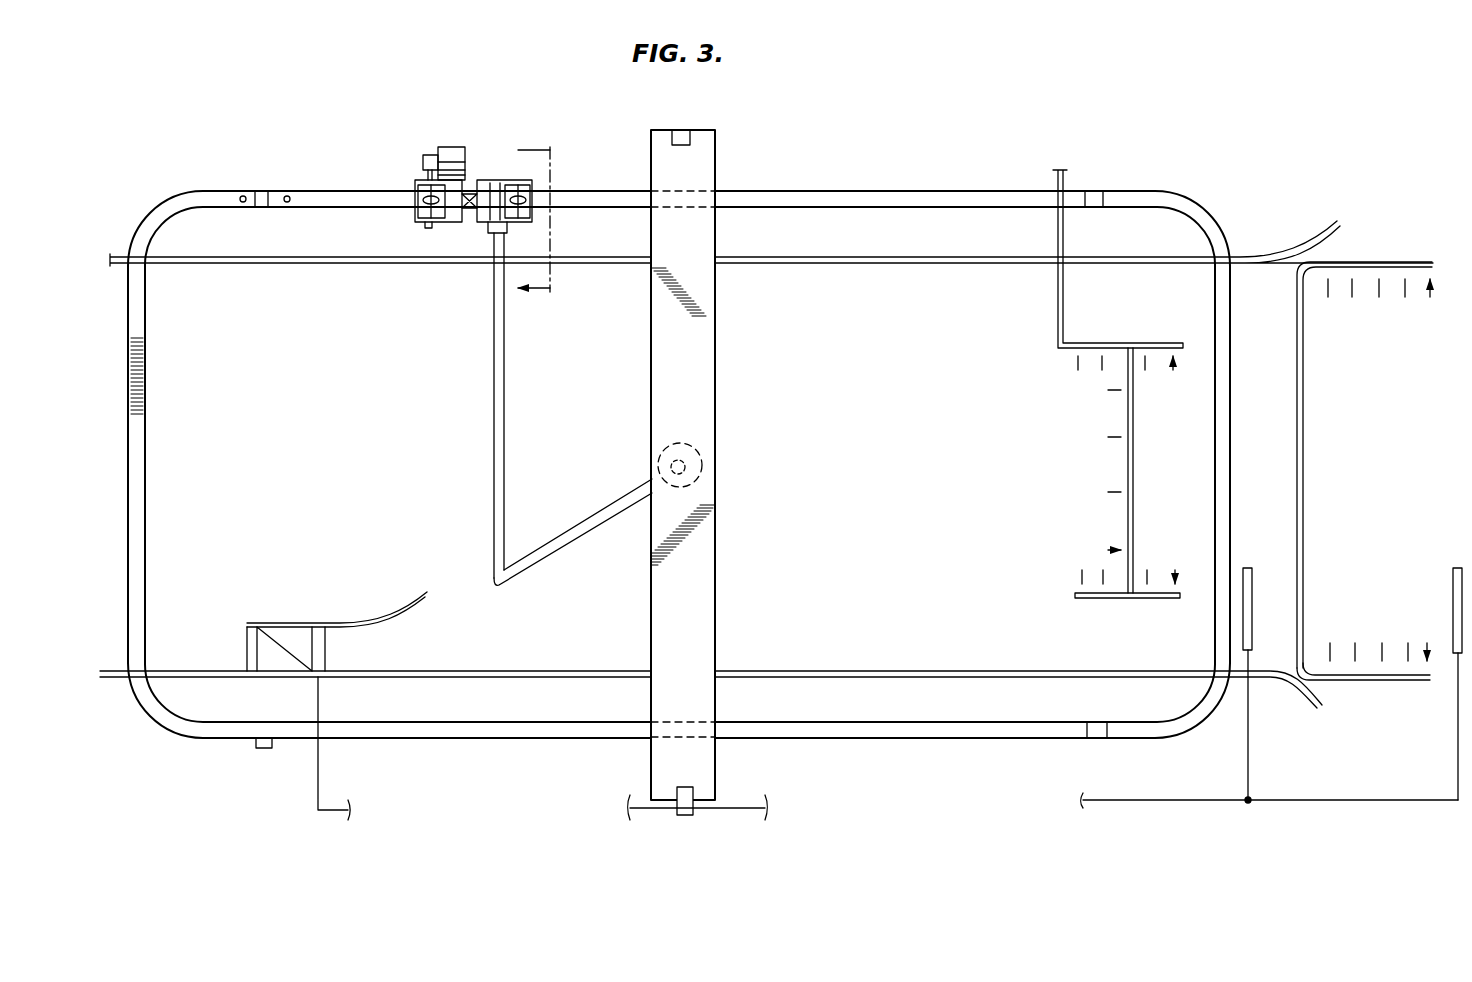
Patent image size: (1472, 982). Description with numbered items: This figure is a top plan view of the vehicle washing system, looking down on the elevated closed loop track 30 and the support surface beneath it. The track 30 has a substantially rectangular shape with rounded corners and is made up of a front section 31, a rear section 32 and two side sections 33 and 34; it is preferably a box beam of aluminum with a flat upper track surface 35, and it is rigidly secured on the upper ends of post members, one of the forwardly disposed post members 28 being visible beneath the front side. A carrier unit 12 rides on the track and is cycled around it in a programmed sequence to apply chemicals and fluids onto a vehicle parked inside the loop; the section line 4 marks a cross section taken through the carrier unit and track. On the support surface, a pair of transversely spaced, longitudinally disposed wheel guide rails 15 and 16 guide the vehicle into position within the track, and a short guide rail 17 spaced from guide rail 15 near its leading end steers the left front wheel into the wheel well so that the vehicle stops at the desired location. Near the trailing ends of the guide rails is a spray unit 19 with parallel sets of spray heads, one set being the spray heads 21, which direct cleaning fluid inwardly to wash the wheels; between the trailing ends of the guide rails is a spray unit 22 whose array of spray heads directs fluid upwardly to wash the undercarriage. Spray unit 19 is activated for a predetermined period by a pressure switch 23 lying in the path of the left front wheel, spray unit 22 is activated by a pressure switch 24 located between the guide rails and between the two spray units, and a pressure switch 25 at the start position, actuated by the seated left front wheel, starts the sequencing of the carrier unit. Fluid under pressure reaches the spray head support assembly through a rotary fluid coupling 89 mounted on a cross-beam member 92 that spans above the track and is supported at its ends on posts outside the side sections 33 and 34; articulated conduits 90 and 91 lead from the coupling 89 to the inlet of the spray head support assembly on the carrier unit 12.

The carrier unit 12 is at (410, 158).
The section line 4- 4 is at (534, 217).
The wheel guide rail 15 is at (870, 668).
The wheel guide rail 16 is at (786, 265).
The short guide rail 17 is at (405, 613).
The spray unit 19 is at (1305, 391).
The spray heads 21 is at (1378, 291).
The spray unit 22 is at (1125, 462).
The pressure switch 23 is at (1452, 608).
The pressure switch 24 is at (1253, 610).
The pressure switch 25 is at (282, 640).
The post member 28 is at (258, 750).
The closed loop track 30 is at (945, 189).
The front section 31 is at (148, 522).
The rear section 32 is at (1232, 470).
The side section 33 is at (888, 739).
The side section 34 is at (757, 209).
The upper track surface 35 is at (825, 209).
The rotary fluid coupling 89 is at (702, 470).
The articulated conduit 90 is at (560, 548).
The articulated conduit 91 is at (505, 409).
The cross-beam member 92 is at (717, 556).